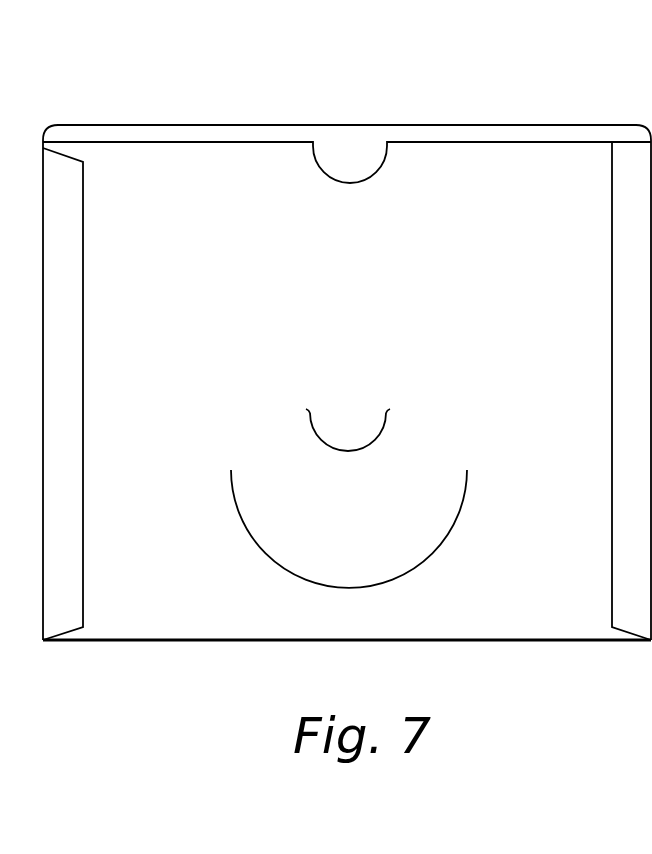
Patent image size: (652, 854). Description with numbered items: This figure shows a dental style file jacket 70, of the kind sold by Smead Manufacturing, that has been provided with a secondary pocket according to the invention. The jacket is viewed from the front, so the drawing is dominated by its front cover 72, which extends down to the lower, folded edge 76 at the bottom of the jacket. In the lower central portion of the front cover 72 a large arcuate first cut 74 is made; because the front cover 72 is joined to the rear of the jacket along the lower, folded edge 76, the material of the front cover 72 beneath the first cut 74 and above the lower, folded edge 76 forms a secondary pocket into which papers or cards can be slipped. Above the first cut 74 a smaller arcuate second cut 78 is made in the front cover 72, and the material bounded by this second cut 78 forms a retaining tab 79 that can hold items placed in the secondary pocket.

The dental style file jacket 70 is at (347, 363).
The front cover 72 is at (117, 157).
The first cut 74 is at (446, 538).
The lower, folded edge 76 is at (473, 642).
The second cut 78 is at (383, 440).
The retaining tab 79 is at (334, 428).